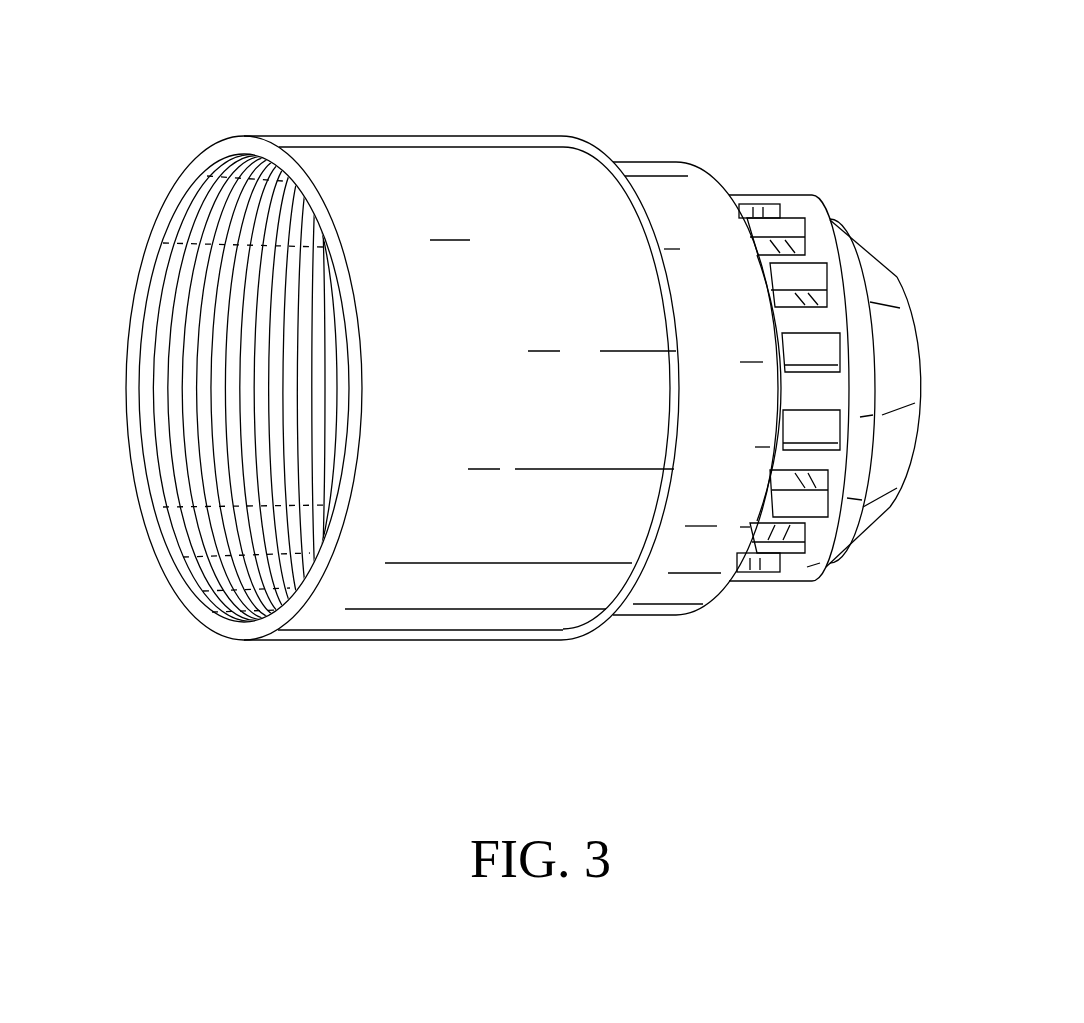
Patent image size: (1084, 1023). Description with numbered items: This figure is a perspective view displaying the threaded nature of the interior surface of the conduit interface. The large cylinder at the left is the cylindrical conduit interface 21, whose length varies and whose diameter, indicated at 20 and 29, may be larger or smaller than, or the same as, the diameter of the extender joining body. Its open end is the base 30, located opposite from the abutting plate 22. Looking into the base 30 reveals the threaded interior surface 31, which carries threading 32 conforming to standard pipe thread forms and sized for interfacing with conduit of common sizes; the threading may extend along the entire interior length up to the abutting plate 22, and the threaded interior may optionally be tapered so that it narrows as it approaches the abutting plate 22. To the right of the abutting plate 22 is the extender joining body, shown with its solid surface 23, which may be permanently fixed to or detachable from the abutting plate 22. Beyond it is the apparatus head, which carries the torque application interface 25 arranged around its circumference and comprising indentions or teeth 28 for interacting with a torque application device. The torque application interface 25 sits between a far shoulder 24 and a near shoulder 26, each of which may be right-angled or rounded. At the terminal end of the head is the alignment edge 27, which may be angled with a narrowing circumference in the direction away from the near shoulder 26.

The diameter of the cylindrical conduit interface 20 is at (326, 160).
The cylindrical conduit interface 21 is at (443, 175).
The abutting plate 22 is at (602, 145).
The solid surface of the extender joining body 23 is at (648, 187).
The far shoulder 24 is at (750, 203).
The torque application interface 25 is at (805, 262).
The near shoulder 26 is at (847, 283).
The alignment edge 27 is at (893, 295).
The indentions or teeth 28 is at (787, 517).
The diameter of the cylindrical conduit interface 29 is at (438, 593).
The base 30 is at (173, 577).
The threaded interior surface 31 is at (170, 390).
The threading 32 is at (188, 230).